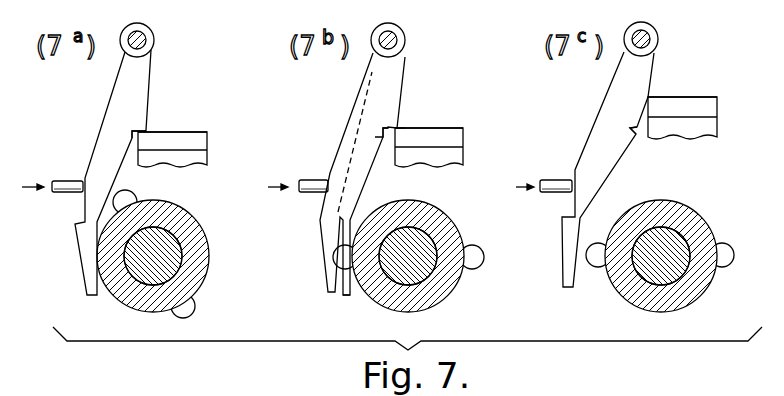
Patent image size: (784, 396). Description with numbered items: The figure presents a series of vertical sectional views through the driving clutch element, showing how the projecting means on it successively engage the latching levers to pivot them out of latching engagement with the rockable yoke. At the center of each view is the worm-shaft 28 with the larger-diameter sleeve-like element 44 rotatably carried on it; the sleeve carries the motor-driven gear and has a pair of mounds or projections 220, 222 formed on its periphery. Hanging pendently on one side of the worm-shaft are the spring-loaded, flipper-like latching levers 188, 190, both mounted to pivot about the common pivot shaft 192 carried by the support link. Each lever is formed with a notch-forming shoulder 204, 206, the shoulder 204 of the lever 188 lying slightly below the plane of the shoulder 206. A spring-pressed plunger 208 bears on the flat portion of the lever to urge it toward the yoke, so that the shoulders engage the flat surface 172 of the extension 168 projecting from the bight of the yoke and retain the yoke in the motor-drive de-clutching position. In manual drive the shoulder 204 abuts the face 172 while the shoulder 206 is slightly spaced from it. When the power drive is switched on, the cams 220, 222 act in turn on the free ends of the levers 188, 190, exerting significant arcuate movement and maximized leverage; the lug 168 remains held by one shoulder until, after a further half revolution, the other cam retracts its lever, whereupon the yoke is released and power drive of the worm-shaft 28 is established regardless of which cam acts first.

The worm-shaft 28 is at (183, 236).
The sleeve-like element 44 is at (180, 210).
The extension 168 is at (200, 141).
The flat surface 172 is at (190, 131).
The latching lever 188 is at (75, 242).
The latching lever 190 is at (347, 297).
The common pivot shaft 192 is at (150, 36).
The notch-forming shoulder 204 is at (150, 133).
The notch-forming shoulder 206 is at (405, 128).
The plunger 208 is at (68, 178).
The projection 220 is at (128, 196).
The projection 222 is at (192, 310).